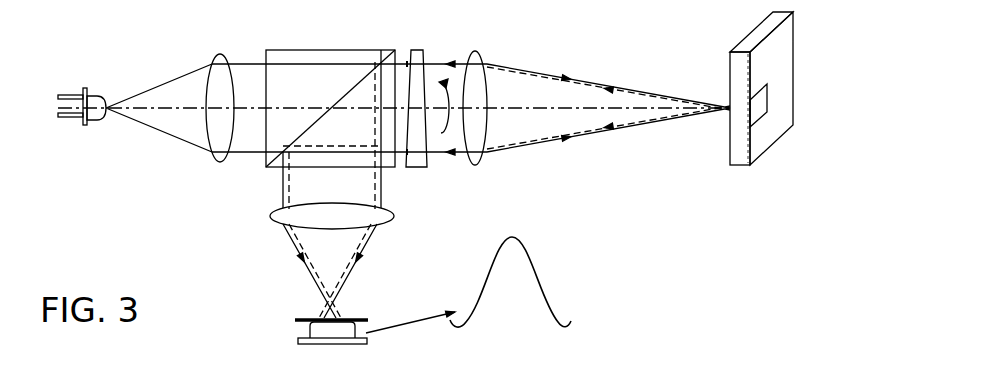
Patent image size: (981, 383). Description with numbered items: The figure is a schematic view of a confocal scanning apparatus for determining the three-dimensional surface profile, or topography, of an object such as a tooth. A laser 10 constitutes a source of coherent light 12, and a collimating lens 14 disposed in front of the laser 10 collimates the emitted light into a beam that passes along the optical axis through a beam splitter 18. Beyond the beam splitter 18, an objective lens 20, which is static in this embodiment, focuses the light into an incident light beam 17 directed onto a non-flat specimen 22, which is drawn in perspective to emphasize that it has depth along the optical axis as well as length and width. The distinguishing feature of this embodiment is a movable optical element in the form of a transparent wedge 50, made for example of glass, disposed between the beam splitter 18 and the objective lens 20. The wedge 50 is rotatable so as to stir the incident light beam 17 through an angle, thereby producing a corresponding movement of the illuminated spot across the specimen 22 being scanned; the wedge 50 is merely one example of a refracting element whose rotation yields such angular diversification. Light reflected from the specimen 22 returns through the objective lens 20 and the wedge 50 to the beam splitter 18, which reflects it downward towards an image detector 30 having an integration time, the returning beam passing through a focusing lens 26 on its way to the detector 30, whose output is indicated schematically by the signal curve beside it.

The laser 10 is at (85, 126).
The source of coherent light 12 is at (100, 121).
The collimating lens 14 is at (222, 162).
The incident light beam 17 is at (553, 75).
The beam splitter 18 is at (326, 50).
The objective lens 20 is at (477, 52).
The specimen 22 is at (773, 50).
The focusing lens 26 is at (393, 213).
The image detector 30 is at (312, 330).
The transparent wedge 50 is at (411, 50).